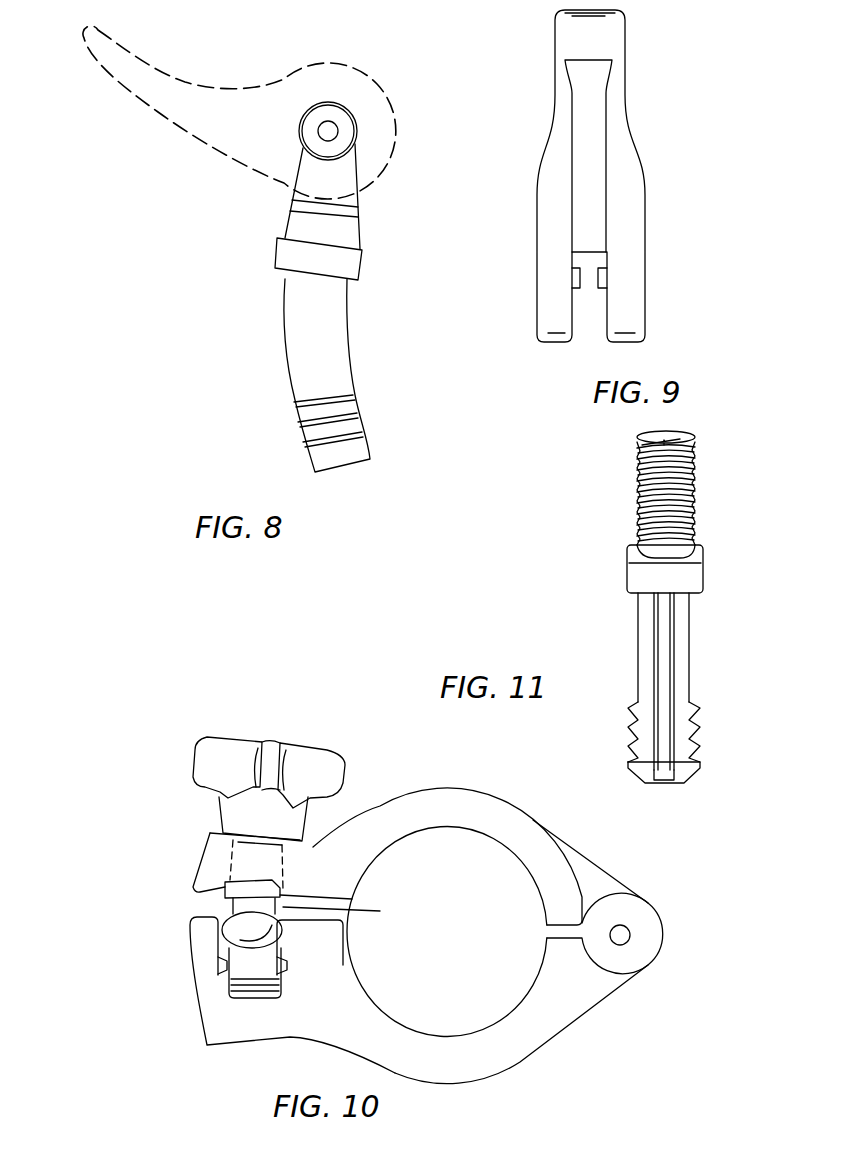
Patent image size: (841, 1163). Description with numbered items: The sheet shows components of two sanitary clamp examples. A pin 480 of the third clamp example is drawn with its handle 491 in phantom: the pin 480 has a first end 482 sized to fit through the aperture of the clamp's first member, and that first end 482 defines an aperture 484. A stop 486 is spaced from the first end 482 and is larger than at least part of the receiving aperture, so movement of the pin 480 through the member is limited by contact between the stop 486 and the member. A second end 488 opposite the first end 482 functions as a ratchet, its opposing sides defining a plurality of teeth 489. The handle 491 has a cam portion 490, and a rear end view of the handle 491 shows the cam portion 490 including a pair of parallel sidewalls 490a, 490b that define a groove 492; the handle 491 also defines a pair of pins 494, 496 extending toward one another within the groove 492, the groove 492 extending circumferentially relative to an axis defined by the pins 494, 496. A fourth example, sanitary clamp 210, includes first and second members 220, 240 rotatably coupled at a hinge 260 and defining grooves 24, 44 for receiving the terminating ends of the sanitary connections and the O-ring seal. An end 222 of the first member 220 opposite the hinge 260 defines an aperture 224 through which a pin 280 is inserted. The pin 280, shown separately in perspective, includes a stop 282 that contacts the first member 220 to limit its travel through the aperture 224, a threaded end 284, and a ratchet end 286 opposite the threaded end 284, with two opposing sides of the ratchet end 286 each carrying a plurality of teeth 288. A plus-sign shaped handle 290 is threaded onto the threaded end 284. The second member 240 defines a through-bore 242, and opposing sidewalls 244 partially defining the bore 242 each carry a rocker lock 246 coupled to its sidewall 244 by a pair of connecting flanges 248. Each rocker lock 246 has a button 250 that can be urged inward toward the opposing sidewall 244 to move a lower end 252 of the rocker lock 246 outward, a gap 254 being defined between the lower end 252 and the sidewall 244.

In FIG. 10, the groove 24 is at (451, 842).
In FIG. 10, the groove 44 is at (450, 1026).
In FIG. 10, the sanitary clamp 210 is at (658, 894).
In FIG. 10, the first member 220 is at (425, 786).
In FIG. 10, the end of the first member 222 is at (333, 826).
In FIG. 10, the aperture 224 is at (210, 833).
In FIG. 10, the second member 240 is at (542, 1045).
In FIG. 10, the through-bore 242 is at (252, 1053).
In FIG. 10, the sidewall 244 is at (242, 1018).
In FIG. 10, the rocker lock 246 is at (248, 963).
In FIG. 10, the connecting flanges 248 is at (218, 942).
In FIG. 10, the button 250 is at (227, 910).
In FIG. 10, the lower end of the rocker lock 252 is at (282, 976).
In FIG. 10, the gap 254 is at (286, 998).
In FIG. 10, the hinge 260 is at (647, 963).
In FIG. 10, the pin 280 is at (343, 903).
In FIG. 11, the pin 280 is at (603, 508).
In FIG. 11, the stop 282 is at (630, 570).
In FIG. 11, the threaded end 284 is at (636, 462).
In FIG. 11, the ratchet end 286 is at (700, 728).
In FIG. 11, the teeth 288 is at (628, 748).
In FIG. 10, the plus-sign shaped handle 290 is at (228, 738).
In FIG. 8, the pin 480 is at (214, 256).
In FIG. 8, the first end 482 is at (333, 163).
In FIG. 8, the aperture 484 is at (320, 128).
In FIG. 8, the stop 486 is at (361, 260).
In FIG. 8, the second end 488 is at (362, 461).
In FIG. 8, the teeth 489 is at (298, 425).
In FIG. 8, the cam portion 490 is at (398, 135).
In FIG. 9, the cam portion 490 is at (627, 343).
In FIG. 9, the sidewall 490a is at (645, 314).
In FIG. 9, the sidewall 490b is at (533, 323).
In FIG. 8, the handle 491 is at (122, 48).
In FIG. 9, the handle 491 is at (612, 28).
In FIG. 9, the groove 492 is at (585, 336).
In FIG. 9, the pin 494 is at (573, 264).
In FIG. 9, the pin 496 is at (605, 266).